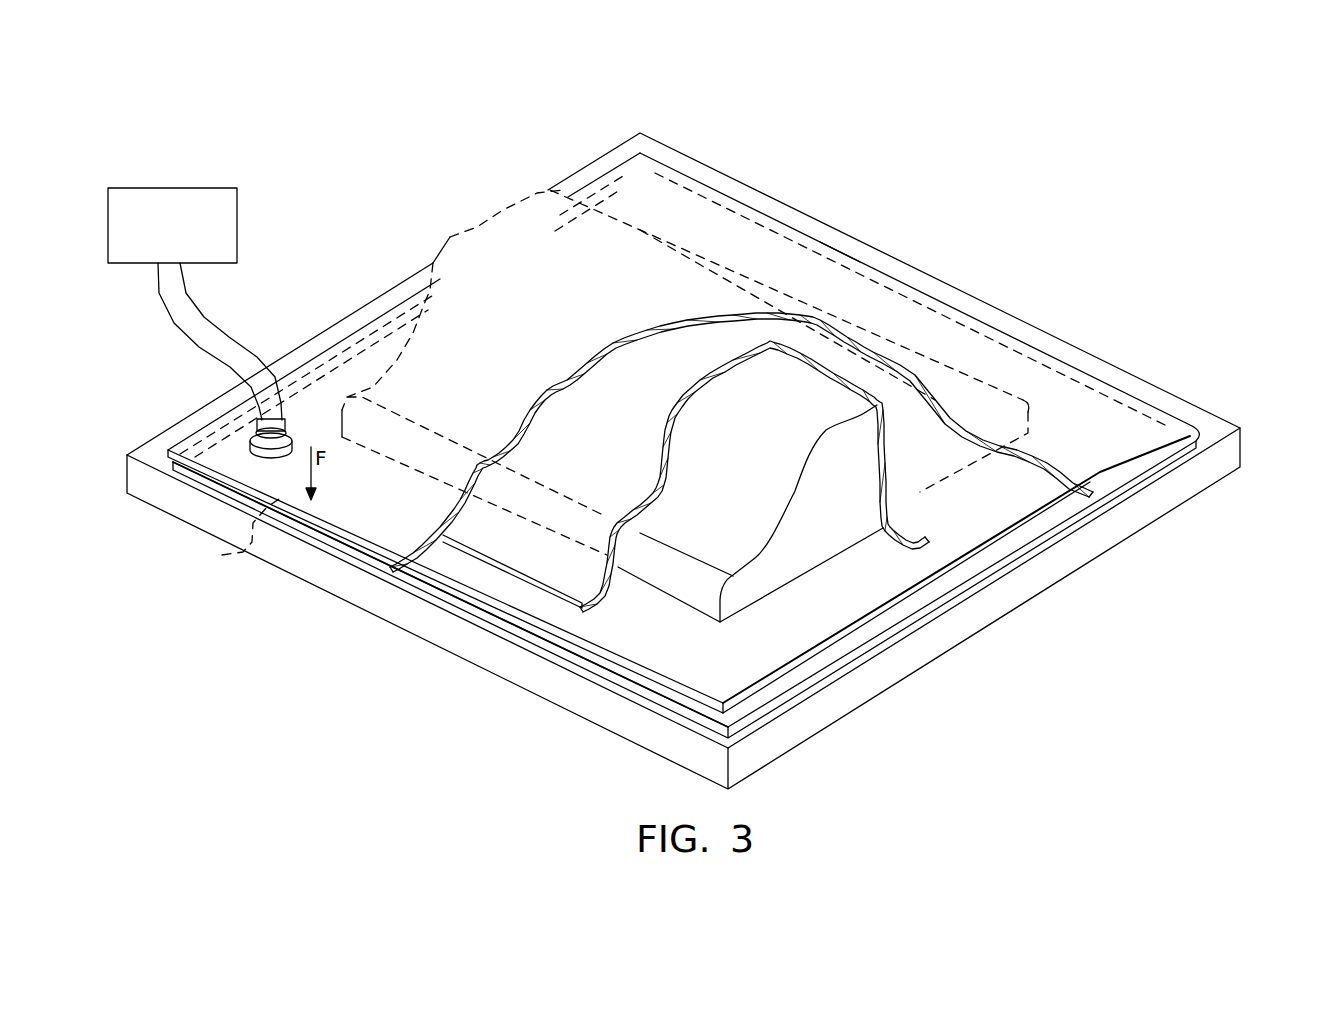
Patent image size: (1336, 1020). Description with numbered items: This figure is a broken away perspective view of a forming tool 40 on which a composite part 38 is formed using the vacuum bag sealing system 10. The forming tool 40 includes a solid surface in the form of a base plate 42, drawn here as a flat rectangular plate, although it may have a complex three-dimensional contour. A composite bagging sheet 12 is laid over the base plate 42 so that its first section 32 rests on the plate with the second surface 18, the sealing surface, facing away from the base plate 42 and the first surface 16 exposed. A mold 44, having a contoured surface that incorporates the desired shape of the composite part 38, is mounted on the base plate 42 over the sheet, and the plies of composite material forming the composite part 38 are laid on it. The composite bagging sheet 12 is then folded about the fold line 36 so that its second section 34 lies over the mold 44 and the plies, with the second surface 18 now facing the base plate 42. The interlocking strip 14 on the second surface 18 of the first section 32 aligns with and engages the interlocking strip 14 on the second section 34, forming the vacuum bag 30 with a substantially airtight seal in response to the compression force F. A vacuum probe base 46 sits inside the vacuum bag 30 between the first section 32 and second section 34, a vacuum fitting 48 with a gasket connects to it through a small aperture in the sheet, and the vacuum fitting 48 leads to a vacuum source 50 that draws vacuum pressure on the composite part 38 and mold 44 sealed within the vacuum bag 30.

The vacuum bag sealing system 10 is at (1111, 144).
The composite bagging sheet 12 is at (908, 292).
The interlocking strip 14 is at (610, 183).
The first surface 16 is at (717, 263).
The second surface 18 is at (793, 652).
The vacuum bag 30 is at (487, 202).
The first section 32 is at (525, 640).
The second section 34 is at (363, 552).
The fold line 36 is at (840, 242).
The composite part 38 is at (593, 594).
The forming tool 40 is at (1088, 321).
The base plate 42 is at (1243, 441).
The mold 44 is at (778, 572).
The vacuum probe base 46 is at (255, 447).
The vacuum fitting 48 is at (285, 418).
The vacuum source 50 is at (212, 188).